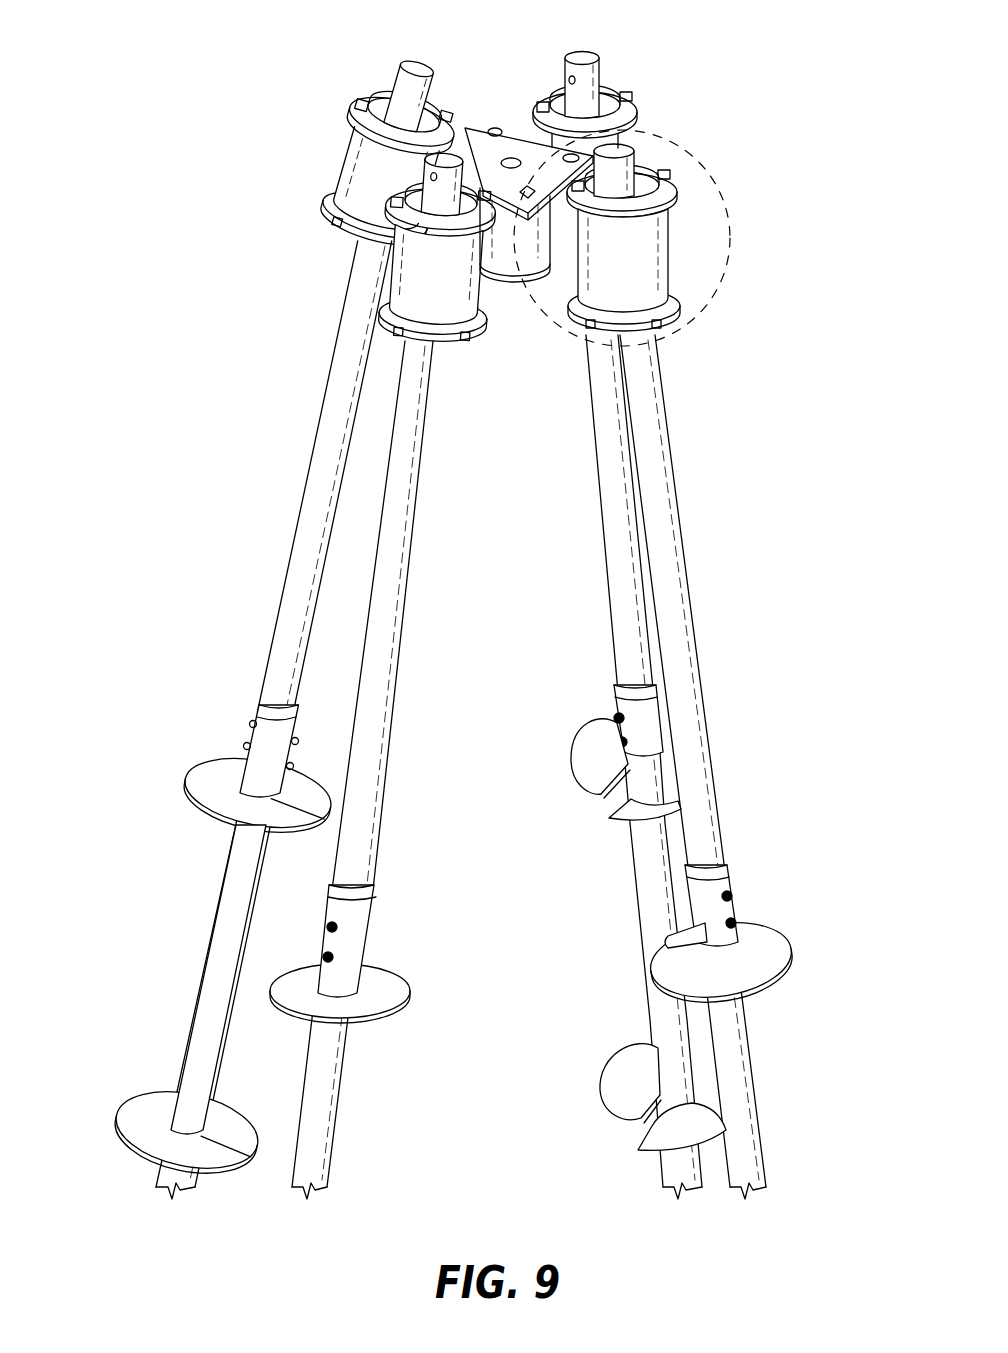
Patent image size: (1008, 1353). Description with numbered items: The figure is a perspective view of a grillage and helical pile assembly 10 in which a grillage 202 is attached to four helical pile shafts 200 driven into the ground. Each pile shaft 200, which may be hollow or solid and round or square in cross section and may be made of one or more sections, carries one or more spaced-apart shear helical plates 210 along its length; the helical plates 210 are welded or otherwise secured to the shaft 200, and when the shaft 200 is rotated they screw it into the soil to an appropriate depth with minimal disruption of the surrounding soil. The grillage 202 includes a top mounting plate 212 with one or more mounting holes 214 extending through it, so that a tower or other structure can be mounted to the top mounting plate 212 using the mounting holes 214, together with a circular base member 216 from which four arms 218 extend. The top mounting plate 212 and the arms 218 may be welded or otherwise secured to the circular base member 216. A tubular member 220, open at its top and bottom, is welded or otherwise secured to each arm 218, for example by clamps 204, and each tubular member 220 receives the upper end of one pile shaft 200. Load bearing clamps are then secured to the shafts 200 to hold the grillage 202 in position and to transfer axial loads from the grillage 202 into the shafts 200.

The support structure assembly 10 is at (686, 153).
The pile shaft 200 is at (323, 505).
The grillage 202 is at (512, 137).
The clamp 204 is at (383, 100).
The shear helical plate 210 is at (222, 780).
The top mounting plate 212 is at (508, 140).
The mounting hole 214 is at (493, 130).
The circular base member 216 is at (520, 260).
The arm 218 is at (567, 247).
The tubular member 220 is at (345, 167).